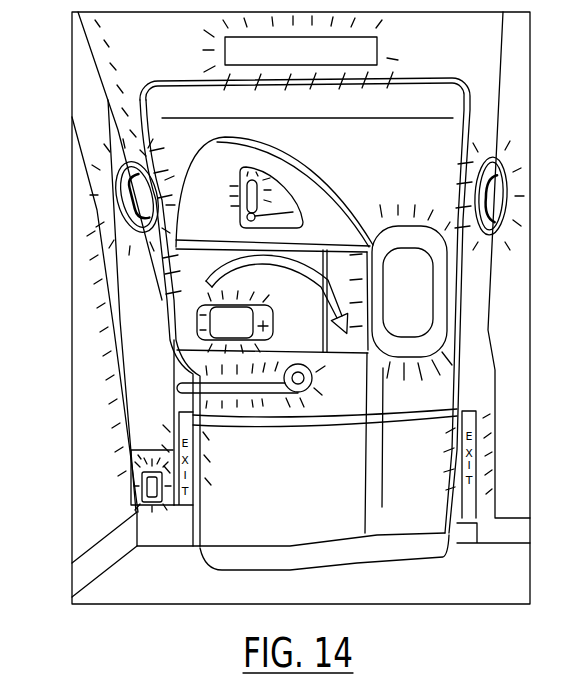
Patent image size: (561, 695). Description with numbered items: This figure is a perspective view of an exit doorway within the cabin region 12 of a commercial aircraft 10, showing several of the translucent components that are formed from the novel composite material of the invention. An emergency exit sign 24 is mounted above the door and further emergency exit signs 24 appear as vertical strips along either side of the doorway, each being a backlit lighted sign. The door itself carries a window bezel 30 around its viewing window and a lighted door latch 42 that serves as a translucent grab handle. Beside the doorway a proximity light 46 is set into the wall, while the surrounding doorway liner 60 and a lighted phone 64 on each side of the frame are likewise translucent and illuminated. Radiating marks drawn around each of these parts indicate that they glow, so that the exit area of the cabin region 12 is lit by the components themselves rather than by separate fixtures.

The commercial aircraft 10 is at (156, 616).
The cabin region 12 is at (110, 55).
The emergency exit sign 24 is at (382, 51).
The window bezel 30 is at (412, 223).
The lighted door latch 42 is at (265, 393).
The proximity light 46 is at (142, 485).
The doorway liner 60 is at (160, 317).
The lighted phone 64 is at (118, 208).